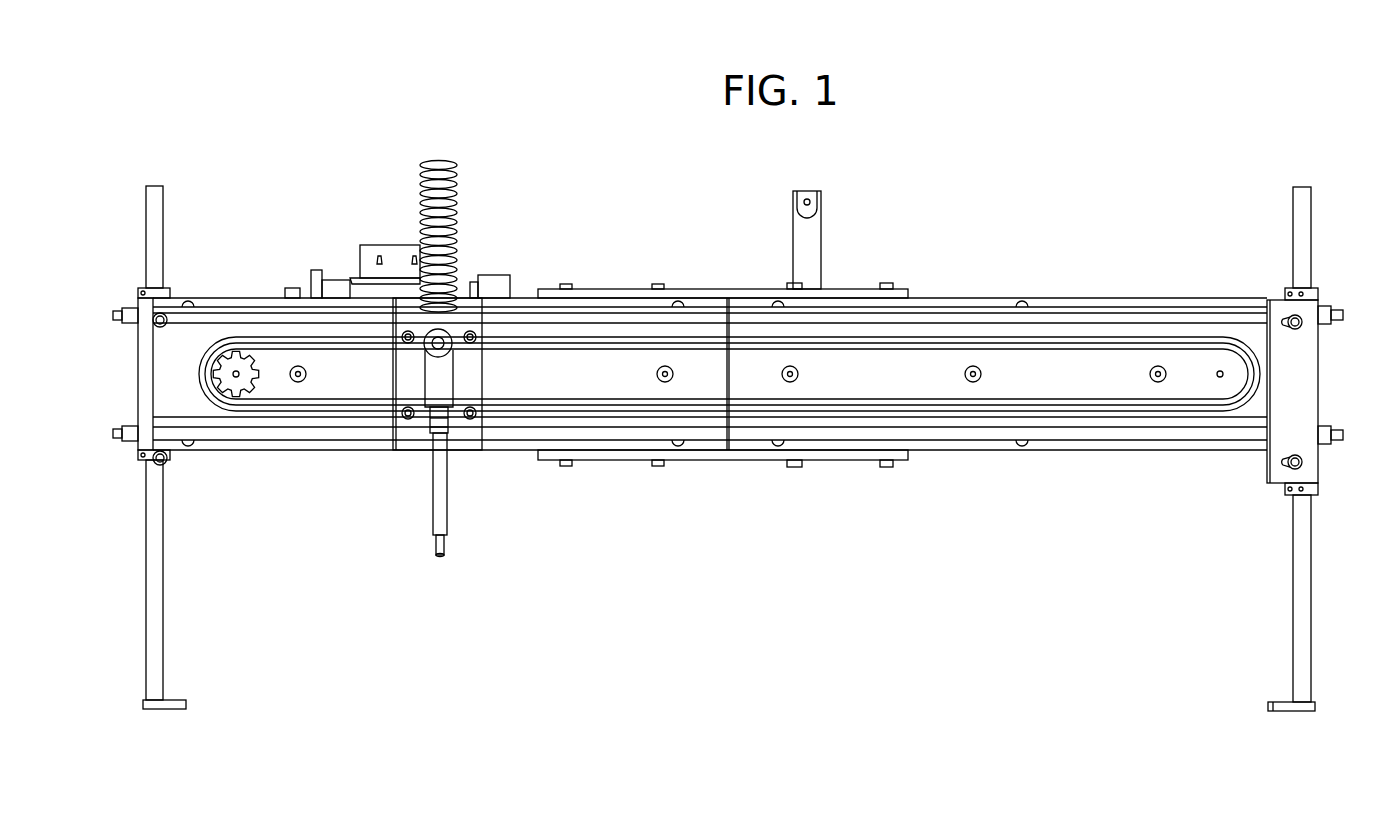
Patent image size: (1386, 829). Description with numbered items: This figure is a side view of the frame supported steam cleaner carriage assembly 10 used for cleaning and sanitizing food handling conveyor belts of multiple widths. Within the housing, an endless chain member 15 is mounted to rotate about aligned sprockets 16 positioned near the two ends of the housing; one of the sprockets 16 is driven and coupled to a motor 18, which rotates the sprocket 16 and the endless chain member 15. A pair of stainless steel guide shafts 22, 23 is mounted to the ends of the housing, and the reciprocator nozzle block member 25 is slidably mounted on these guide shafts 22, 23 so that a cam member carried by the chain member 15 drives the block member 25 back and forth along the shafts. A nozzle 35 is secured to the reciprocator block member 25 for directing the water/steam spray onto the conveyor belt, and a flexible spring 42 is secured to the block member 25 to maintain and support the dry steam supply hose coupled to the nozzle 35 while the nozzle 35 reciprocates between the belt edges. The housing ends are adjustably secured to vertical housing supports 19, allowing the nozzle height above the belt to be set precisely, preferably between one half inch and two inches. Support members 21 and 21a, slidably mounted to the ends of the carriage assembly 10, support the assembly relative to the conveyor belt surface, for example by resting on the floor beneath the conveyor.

The frame supported steam cleaner carriage assembly 10 is at (935, 225).
The endless chain member 15 is at (278, 345).
The sprocket 16 is at (237, 392).
The motor 18 is at (505, 290).
The vertical housing support 19 is at (170, 289).
The support member 21 is at (176, 700).
The support member 21a is at (165, 567).
The guide shaft 22 is at (1075, 312).
The guide shaft 23 is at (1108, 437).
The reciprocator nozzle block member 25 is at (413, 435).
The nozzle 35 is at (447, 518).
The flexible spring 42 is at (420, 178).